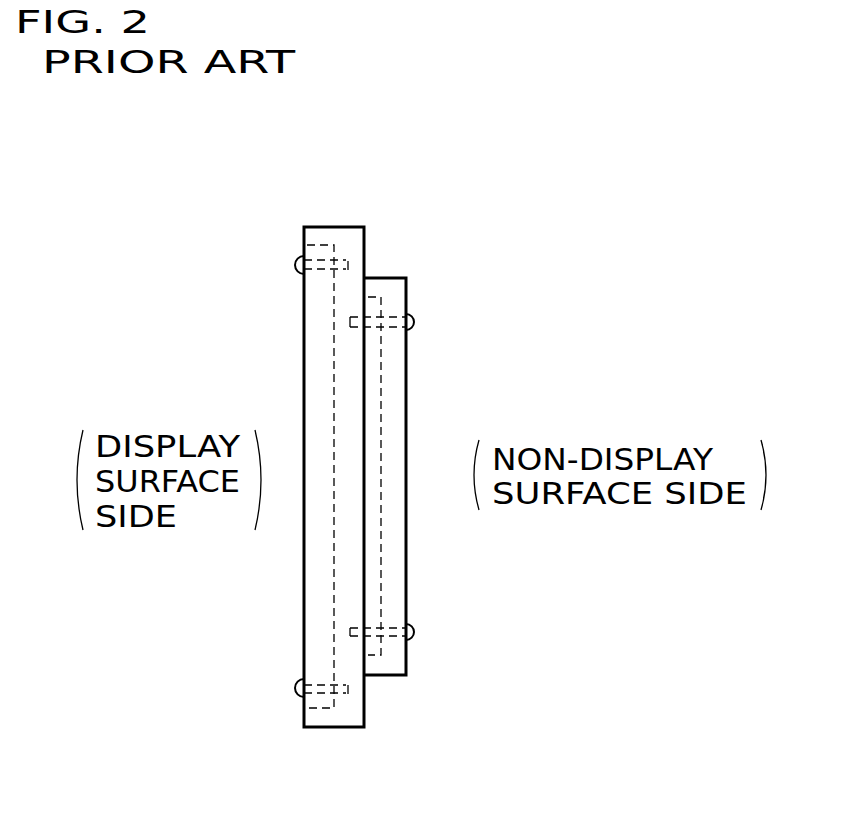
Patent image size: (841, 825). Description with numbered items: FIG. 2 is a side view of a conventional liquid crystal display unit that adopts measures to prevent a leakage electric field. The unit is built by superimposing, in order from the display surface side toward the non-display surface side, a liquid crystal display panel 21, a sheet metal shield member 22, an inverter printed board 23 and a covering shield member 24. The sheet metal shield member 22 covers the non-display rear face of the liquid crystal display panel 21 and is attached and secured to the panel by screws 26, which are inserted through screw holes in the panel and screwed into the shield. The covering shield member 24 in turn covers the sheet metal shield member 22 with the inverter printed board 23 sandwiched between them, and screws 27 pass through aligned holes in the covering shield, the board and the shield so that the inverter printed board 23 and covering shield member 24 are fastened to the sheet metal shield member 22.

The liquid crystal display panel 21 is at (334, 360).
The sheet metal shield member 22 is at (343, 227).
The inverter printed board 23 is at (370, 398).
The covering shield member 24 is at (398, 543).
The screws 26 is at (295, 265).
The screws 27 is at (414, 321).